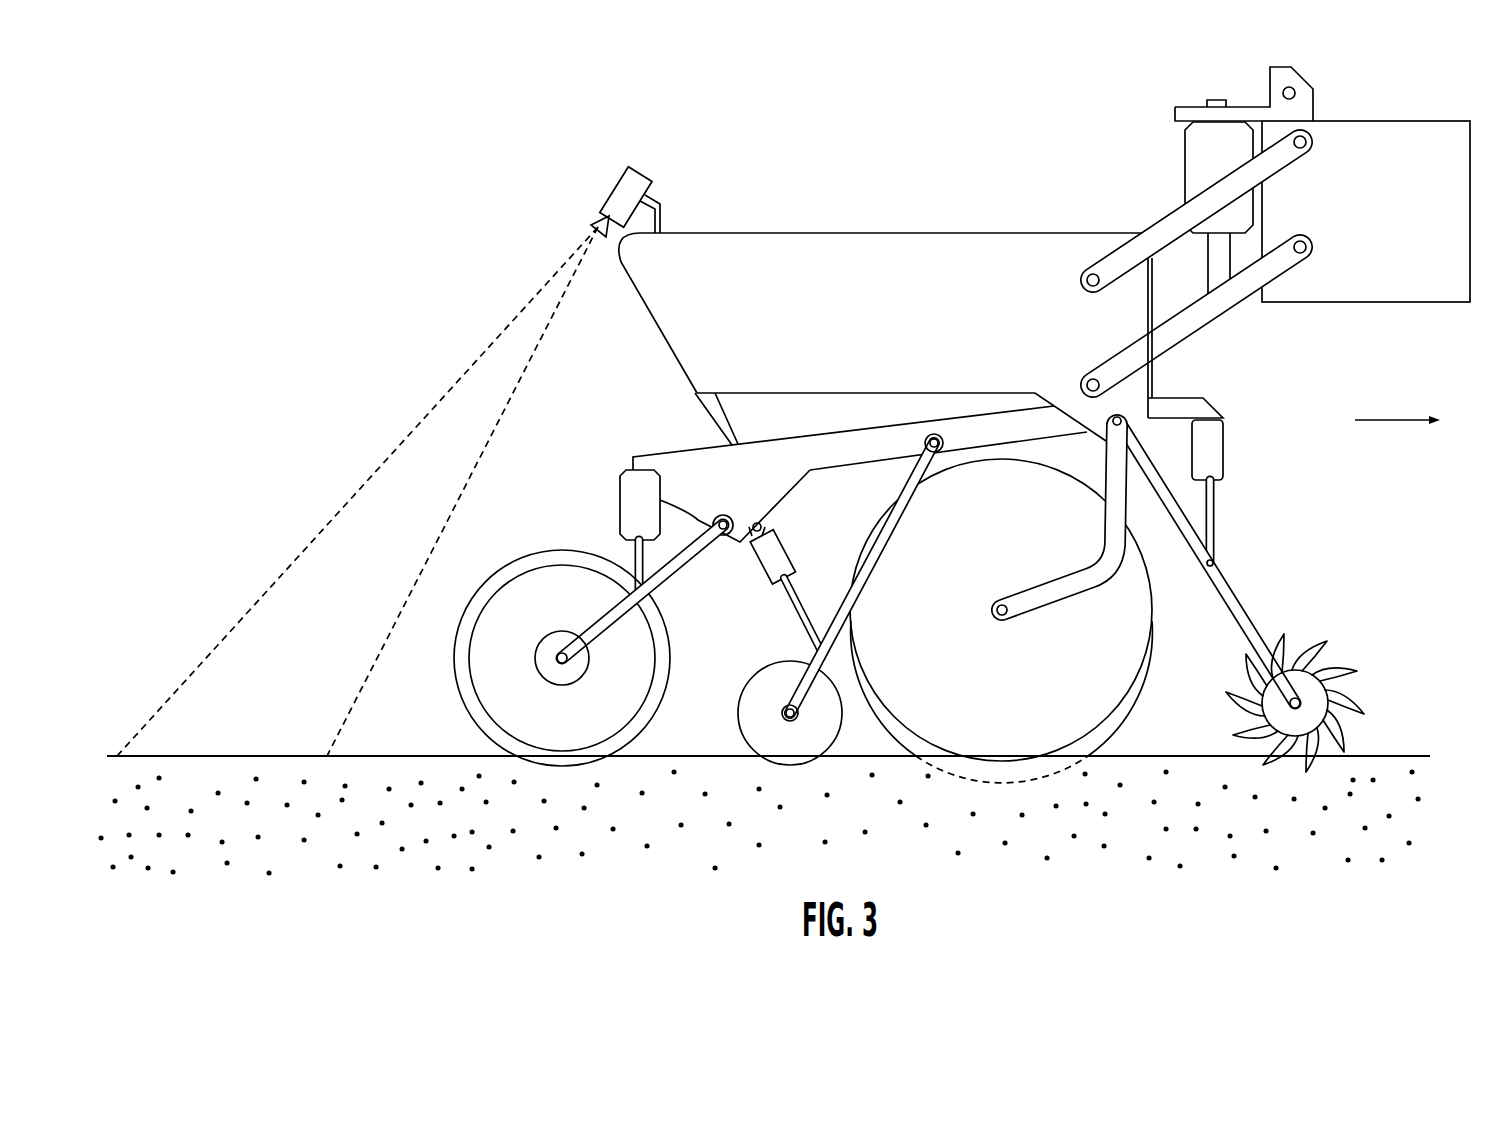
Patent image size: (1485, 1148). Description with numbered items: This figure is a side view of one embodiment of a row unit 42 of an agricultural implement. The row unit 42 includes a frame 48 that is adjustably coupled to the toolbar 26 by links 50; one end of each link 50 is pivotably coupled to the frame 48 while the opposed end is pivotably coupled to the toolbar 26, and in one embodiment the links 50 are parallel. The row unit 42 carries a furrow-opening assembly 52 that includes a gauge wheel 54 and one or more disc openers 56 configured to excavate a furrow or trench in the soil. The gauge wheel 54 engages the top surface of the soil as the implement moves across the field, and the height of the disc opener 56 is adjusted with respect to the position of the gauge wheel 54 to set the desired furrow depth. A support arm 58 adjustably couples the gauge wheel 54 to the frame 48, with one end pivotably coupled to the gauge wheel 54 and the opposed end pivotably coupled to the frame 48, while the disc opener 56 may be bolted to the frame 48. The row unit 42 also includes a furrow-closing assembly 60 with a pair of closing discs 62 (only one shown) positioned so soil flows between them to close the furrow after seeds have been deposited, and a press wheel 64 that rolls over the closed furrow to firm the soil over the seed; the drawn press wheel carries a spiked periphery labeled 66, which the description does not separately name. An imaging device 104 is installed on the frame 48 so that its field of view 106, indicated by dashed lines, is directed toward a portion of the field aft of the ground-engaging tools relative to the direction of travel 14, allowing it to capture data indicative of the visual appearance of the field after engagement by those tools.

The direction of travel 14 is at (1398, 420).
The toolbar 26 is at (1377, 302).
The row unit 42 is at (708, 159).
The frame 48 is at (888, 231).
The links 50 is at (1296, 247).
The furrow-opening assembly 52 is at (1167, 677).
The gauge wheel 54 is at (1153, 577).
The disc opener 56 is at (942, 765).
The support arm 58 is at (1045, 606).
The furrow-closing assembly 60 is at (758, 765).
The closing disc 62 is at (738, 727).
The press wheel 64 is at (455, 692).
The spikes 66 is at (1342, 657).
The imaging device 104 is at (612, 200).
The field of view 106 is at (556, 320).